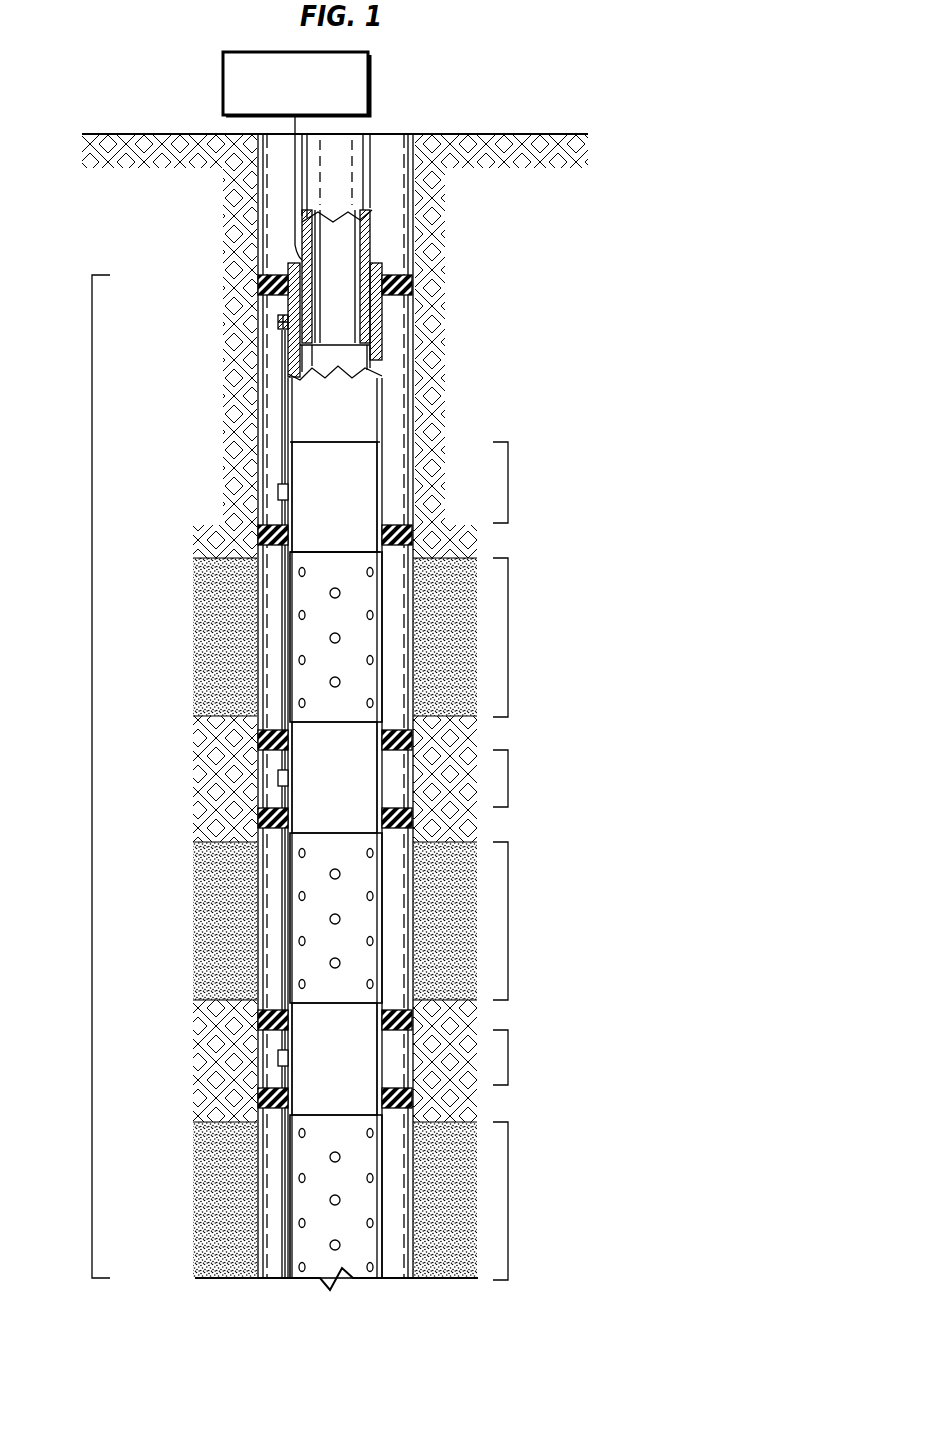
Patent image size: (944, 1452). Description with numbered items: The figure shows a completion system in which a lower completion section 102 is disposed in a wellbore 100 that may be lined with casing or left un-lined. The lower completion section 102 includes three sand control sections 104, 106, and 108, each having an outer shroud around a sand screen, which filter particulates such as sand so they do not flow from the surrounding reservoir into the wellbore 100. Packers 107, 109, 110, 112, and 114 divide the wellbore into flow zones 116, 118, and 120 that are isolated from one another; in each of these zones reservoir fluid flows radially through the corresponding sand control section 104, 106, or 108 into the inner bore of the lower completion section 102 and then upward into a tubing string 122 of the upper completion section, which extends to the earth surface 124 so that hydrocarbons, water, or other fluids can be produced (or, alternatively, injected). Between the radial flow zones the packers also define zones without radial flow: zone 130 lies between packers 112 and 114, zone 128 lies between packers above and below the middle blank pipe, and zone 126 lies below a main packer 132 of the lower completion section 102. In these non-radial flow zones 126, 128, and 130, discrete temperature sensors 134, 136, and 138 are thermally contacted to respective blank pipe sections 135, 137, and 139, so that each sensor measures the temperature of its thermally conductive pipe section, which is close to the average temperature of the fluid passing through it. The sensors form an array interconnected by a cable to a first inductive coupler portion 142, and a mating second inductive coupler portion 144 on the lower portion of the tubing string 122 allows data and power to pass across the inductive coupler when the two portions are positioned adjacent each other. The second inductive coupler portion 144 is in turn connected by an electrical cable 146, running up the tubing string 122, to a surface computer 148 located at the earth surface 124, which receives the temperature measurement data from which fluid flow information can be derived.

The wellbore 100 is at (275, 1262).
The lower completion section 102 is at (92, 778).
The sand control section 104 is at (300, 640).
The sand control section 106 is at (300, 918).
The packer 107 is at (262, 535).
The sand control section 108 is at (300, 1160).
The packer 109 is at (262, 740).
The packer 110 is at (262, 818).
The packer 112 is at (262, 1020).
The packer 114 is at (262, 1098).
The flow zone 116 is at (508, 637).
The flow zone 118 is at (508, 921).
The flow zone 120 is at (508, 1201).
The tubing string 122 is at (372, 187).
The earth surface 124 is at (515, 133).
The zone without radial flow 126 is at (508, 482).
The zone without radial flow 128 is at (508, 778).
The zone without radial flow 130 is at (508, 1058).
The main packer 132 is at (412, 285).
The discrete temperature sensor 134 is at (278, 492).
The blank pipe section 135 is at (305, 465).
The discrete temperature sensor 136 is at (278, 777).
The blank pipe section 137 is at (305, 803).
The discrete temperature sensor 138 is at (278, 1057).
The blank pipe section 139 is at (305, 1083).
The first inductive coupler portion 142 is at (278, 320).
The second inductive coupler portion 144 is at (288, 337).
The electrical cable 146 is at (295, 215).
The surface computer 148 is at (370, 75).